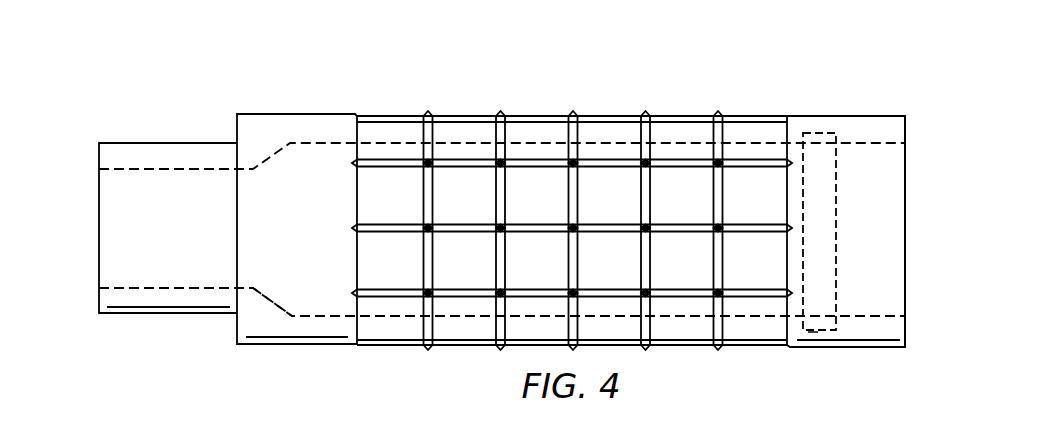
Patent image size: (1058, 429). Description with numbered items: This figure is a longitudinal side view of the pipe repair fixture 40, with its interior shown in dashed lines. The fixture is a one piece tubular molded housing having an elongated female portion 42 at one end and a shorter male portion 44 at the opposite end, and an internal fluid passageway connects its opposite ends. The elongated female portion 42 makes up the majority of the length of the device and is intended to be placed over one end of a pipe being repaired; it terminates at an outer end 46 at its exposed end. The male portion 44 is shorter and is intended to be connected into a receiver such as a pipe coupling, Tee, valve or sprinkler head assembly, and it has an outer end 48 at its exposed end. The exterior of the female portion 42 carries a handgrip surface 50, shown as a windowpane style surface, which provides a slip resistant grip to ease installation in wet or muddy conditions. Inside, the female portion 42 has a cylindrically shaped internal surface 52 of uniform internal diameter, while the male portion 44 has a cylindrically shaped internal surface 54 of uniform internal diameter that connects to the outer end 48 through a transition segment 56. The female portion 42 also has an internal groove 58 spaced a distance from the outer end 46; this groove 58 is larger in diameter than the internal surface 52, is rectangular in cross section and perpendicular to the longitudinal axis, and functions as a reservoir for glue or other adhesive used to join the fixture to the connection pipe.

The pipe repair fixture 40 is at (332, 76).
The elongated female portion 42 is at (872, 113).
The male portion 44 is at (167, 315).
The outer end 46 is at (907, 268).
The outer end 48 is at (98, 268).
The handgrip surface 50 is at (597, 210).
The internal surface 52 is at (747, 318).
The internal surface 54 is at (172, 172).
The transition segment 56 is at (275, 302).
The internal groove 58 is at (813, 334).